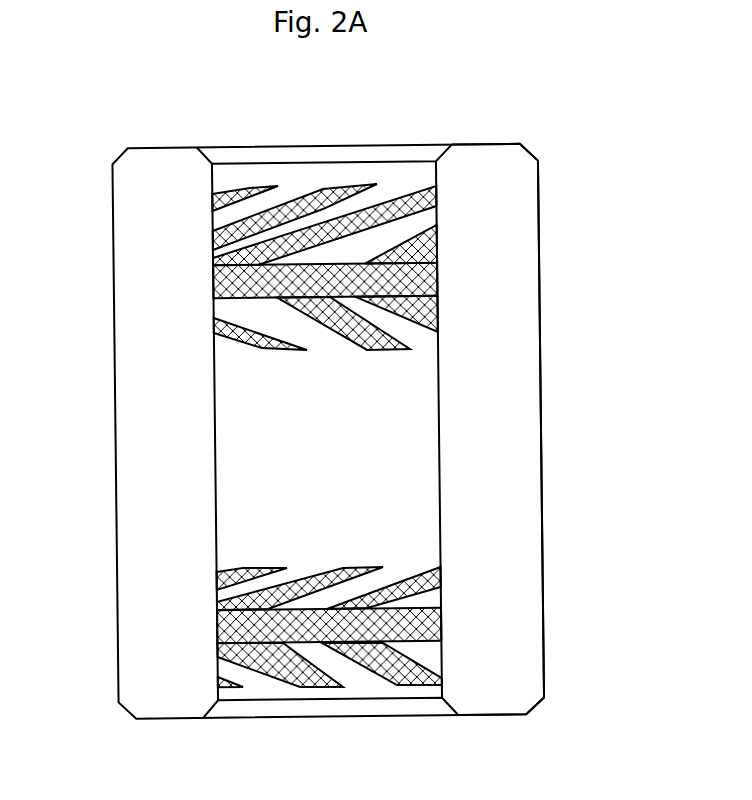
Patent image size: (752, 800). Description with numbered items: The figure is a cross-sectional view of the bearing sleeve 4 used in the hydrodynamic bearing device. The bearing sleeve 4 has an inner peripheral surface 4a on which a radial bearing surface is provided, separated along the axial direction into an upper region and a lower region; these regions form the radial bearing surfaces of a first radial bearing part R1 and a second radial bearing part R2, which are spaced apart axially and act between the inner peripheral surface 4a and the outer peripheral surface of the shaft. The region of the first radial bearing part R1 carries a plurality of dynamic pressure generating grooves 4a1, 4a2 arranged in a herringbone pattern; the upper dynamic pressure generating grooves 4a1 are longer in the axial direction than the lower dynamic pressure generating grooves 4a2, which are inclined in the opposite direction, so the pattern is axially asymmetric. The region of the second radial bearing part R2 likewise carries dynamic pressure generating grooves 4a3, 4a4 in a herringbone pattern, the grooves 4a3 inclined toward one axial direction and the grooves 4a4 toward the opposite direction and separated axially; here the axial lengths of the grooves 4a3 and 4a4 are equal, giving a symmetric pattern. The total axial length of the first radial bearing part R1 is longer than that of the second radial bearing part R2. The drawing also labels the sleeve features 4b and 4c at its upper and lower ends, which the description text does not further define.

The bearing sleeve 4 is at (572, 255).
The inner peripheral surface 4a is at (443, 433).
The flange 4b is at (488, 716).
The flange 4c is at (516, 146).
The dynamic pressure generating grooves 4a1 is at (270, 200).
The dynamic pressure generating grooves 4a2 is at (293, 333).
The dynamic pressure generating grooves 4a3 is at (282, 578).
The dynamic pressure generating grooves 4a4 is at (342, 675).
The first radial bearing part R1 is at (212, 262).
The second radial bearing part R2 is at (217, 633).